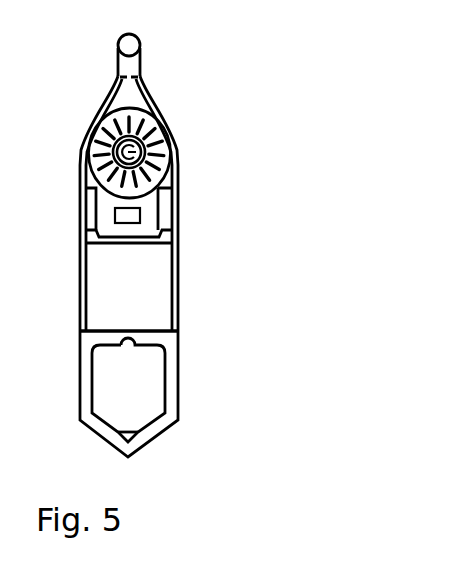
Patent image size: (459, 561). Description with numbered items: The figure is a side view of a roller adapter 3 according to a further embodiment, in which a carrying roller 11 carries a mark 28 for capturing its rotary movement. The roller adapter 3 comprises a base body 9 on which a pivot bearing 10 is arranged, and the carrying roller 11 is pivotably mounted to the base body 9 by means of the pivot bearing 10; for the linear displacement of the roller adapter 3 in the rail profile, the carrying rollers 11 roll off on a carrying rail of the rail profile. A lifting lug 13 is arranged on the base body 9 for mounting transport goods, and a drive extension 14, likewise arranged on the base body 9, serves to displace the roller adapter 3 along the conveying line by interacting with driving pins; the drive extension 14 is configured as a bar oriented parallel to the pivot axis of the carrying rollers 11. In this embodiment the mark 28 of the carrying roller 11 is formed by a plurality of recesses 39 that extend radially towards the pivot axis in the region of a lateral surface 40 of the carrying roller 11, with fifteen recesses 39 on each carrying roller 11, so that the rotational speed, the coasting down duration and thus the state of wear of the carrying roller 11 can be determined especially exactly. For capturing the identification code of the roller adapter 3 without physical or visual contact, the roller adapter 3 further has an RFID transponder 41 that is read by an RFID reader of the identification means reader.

The roller adapter 3 is at (215, 237).
The base body 9 is at (150, 298).
The pivot bearing 10 is at (145, 151).
The carrying roller 11 is at (170, 120).
The lifting lug 13 is at (172, 402).
The drive extension 14 is at (128, 46).
The mark 28 is at (231, 171).
The recesses 39 is at (150, 145).
The lateral surface 40 is at (162, 133).
The RFID transponder 41 is at (128, 215).